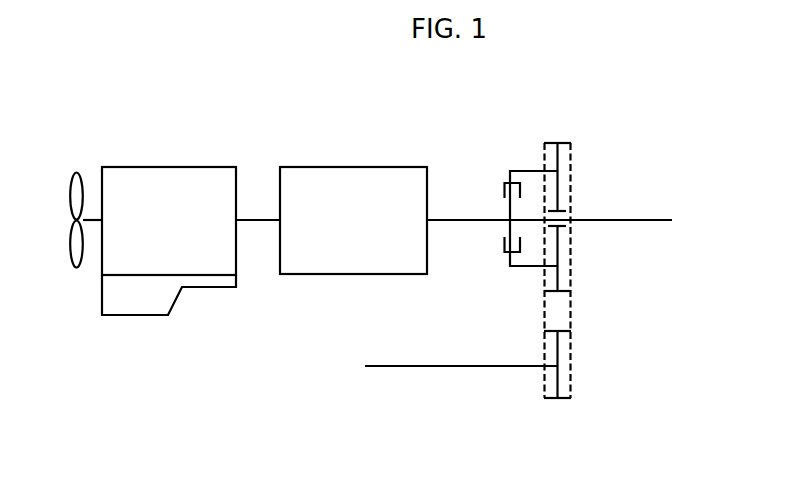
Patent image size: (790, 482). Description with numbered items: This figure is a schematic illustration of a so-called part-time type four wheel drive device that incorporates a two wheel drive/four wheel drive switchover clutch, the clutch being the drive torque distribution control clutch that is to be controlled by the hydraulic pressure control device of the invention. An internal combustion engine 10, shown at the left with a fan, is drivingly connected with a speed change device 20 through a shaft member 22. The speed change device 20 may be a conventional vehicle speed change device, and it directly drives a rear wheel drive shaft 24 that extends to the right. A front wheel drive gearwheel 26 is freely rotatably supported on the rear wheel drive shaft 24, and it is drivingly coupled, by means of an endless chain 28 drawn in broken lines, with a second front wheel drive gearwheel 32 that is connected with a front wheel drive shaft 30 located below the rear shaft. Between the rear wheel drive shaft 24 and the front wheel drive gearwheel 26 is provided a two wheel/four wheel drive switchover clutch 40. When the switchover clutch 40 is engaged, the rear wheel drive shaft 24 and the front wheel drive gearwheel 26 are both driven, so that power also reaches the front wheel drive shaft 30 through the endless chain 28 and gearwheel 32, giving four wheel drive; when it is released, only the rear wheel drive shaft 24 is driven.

The internal combustion engine 10 is at (174, 178).
The speed change device 20 is at (354, 178).
The shaft member 22 is at (254, 224).
The rear wheel drive shaft 24 is at (643, 216).
The front wheel drive gearwheel 26 is at (560, 185).
The endless chain 28 is at (540, 312).
The front wheel drive shaft 30 is at (396, 369).
The front wheel drive gearwheel 32 is at (560, 383).
The two wheel/four wheel drive switchover clutch 40 is at (510, 210).